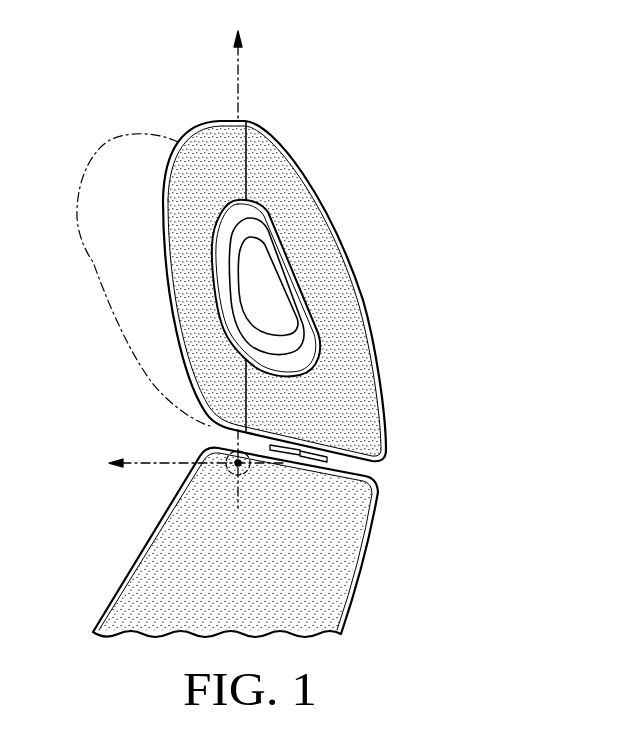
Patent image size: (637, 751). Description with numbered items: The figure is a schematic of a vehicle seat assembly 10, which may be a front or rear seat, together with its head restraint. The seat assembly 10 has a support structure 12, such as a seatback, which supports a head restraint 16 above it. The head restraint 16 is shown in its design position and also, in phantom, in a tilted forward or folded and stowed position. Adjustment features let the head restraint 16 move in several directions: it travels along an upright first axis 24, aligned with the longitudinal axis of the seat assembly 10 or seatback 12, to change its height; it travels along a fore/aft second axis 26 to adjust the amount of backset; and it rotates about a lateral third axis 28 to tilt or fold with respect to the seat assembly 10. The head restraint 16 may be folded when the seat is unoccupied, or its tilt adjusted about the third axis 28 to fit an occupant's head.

The vehicle seat assembly 10 is at (276, 352).
The support structure 12 is at (378, 543).
The head restraint 16 is at (371, 320).
The first axis 24 is at (240, 86).
The second axis 26 is at (157, 466).
The third axis 28 is at (249, 473).